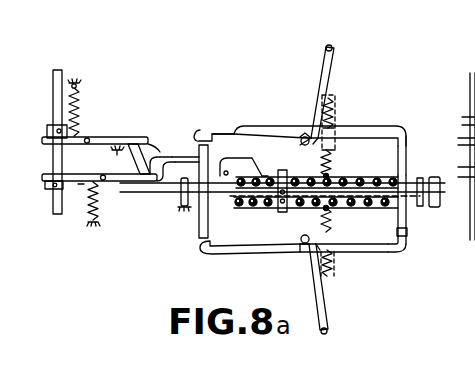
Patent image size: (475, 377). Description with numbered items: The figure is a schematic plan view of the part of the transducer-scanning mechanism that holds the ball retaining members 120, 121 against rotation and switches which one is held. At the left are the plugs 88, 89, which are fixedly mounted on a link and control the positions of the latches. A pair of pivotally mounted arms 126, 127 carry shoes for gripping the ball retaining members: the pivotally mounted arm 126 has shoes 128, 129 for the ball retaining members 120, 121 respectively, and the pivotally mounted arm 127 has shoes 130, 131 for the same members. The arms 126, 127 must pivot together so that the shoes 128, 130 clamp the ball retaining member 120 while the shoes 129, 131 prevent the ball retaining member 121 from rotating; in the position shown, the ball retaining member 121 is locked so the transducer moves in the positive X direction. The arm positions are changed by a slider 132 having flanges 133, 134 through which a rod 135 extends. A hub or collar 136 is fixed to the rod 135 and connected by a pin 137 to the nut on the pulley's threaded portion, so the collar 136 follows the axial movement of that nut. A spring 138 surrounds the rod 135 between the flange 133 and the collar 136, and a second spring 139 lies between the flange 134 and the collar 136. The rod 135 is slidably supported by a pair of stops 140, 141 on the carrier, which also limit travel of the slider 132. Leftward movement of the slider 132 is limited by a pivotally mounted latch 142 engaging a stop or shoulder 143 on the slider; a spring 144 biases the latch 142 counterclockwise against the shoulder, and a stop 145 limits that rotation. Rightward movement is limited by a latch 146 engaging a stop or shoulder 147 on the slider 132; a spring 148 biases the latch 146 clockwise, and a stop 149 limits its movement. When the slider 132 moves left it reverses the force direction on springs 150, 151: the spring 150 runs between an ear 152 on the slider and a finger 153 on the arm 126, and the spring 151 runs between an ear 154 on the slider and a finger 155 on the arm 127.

The plug 88 is at (52, 125).
The plug 89 is at (48, 190).
The ball retaining member 120 is at (209, 222).
The ball retaining member 121 is at (407, 160).
The pivotally mounted arm 126 is at (378, 252).
The pivotally mounted arm 127 is at (360, 126).
The shoe 128 is at (204, 254).
The shoe 129 is at (408, 243).
The shoe 130 is at (194, 137).
The shoe 131 is at (406, 135).
The slider 132 is at (282, 170).
The flange 133 is at (222, 166).
The flange 134 is at (420, 207).
The rod 135 is at (143, 193).
The collar 136 is at (297, 134).
The pin 137 is at (286, 204).
The spring 138 is at (260, 208).
The second spring 139 is at (362, 178).
The stop 140 is at (182, 206).
The stop 141 is at (436, 208).
The pivotally mounted latch 142 is at (136, 145).
The stop or shoulder 143 is at (160, 156).
The spring 144 is at (99, 212).
The stop 145 is at (82, 184).
The latch 146 is at (152, 140).
The stop or shoulder 147 is at (178, 155).
The spring 148 is at (79, 101).
The stop 149 is at (113, 152).
The spring 150 is at (336, 271).
The spring 151 is at (334, 95).
The ear 152 is at (332, 222).
The finger 153 is at (312, 274).
The ear 154 is at (328, 162).
The finger 155 is at (313, 94).